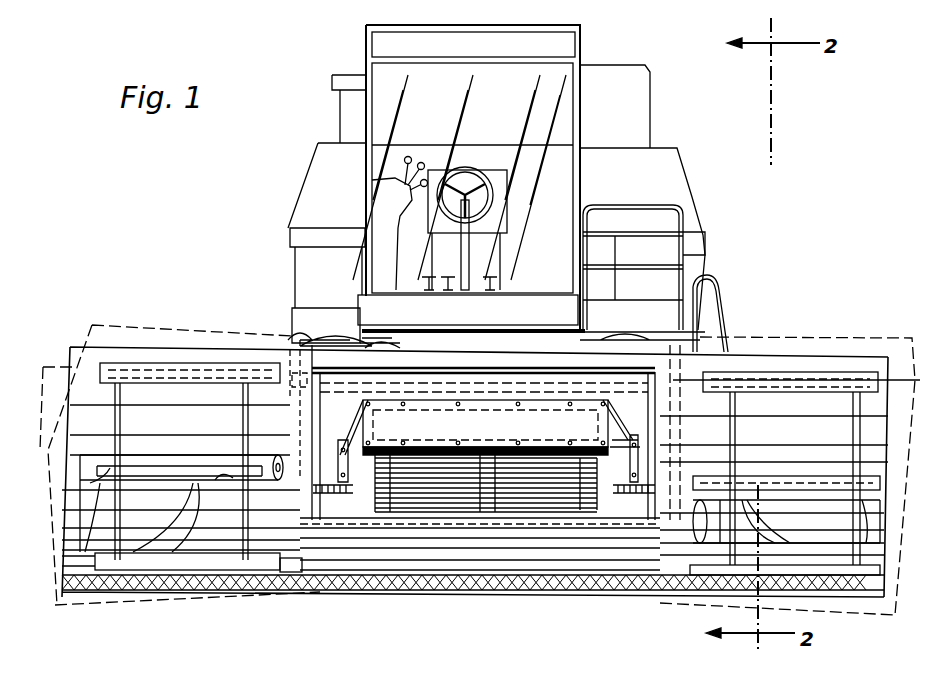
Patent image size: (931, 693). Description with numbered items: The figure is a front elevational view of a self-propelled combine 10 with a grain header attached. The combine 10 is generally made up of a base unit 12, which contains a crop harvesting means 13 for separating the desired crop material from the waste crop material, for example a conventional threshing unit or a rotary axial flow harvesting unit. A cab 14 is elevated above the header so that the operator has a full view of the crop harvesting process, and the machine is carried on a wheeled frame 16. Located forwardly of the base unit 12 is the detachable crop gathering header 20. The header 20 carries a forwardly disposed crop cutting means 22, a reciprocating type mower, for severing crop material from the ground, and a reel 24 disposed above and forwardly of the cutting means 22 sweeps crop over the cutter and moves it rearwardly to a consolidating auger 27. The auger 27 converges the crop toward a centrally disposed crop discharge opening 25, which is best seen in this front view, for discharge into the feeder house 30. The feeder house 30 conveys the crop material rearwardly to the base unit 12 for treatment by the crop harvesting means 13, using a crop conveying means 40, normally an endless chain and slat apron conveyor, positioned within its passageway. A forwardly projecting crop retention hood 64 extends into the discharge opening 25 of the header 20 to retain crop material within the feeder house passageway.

The combine 10 is at (241, 172).
The base unit 12 is at (693, 197).
The crop harvesting means 13 is at (376, 340).
The cab 14 is at (581, 47).
The wheeled frame 16 is at (319, 341).
The crop gathering header 20 is at (136, 323).
The crop cutting means 22 is at (330, 592).
The reel 24 is at (210, 363).
The crop discharge opening 25 is at (358, 432).
The consolidating auger 27 is at (222, 442).
The feeder house 30 is at (512, 345).
The crop conveying means 40 is at (467, 456).
The crop retention hood 64 is at (613, 414).